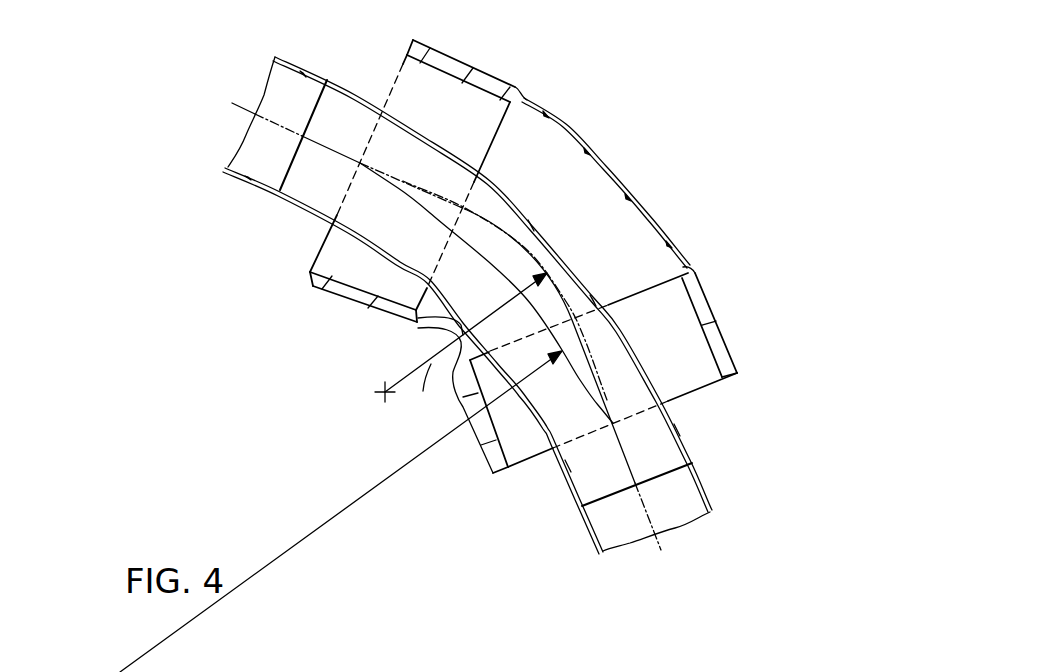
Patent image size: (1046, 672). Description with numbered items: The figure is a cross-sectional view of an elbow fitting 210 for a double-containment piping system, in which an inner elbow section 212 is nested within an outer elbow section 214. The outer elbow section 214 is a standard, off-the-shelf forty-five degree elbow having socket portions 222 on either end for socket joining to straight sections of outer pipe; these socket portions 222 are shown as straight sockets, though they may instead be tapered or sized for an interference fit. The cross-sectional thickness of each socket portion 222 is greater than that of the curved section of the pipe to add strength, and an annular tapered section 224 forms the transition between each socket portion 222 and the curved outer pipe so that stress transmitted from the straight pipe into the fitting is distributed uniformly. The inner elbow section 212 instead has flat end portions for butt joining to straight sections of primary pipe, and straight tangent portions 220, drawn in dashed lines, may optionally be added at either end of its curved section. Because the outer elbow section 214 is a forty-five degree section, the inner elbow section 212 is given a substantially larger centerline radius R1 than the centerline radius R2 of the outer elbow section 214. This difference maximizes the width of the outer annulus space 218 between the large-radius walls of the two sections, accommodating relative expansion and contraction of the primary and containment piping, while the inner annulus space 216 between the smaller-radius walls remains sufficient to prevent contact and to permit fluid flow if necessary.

The elbow fitting 210 is at (629, 156).
The inner elbow section 212 is at (537, 195).
The outer elbow section 214 is at (564, 126).
The inner annulus space 216 is at (437, 331).
The outer annulus space 218 is at (603, 214).
The straight tangent portions 220 is at (322, 72).
The socket portions 222 is at (460, 58).
The annular tapered section 224 is at (527, 99).
The centerline radius of the inner elbow section R1 is at (361, 492).
The centerline radius of the outer elbow section R2 is at (461, 348).